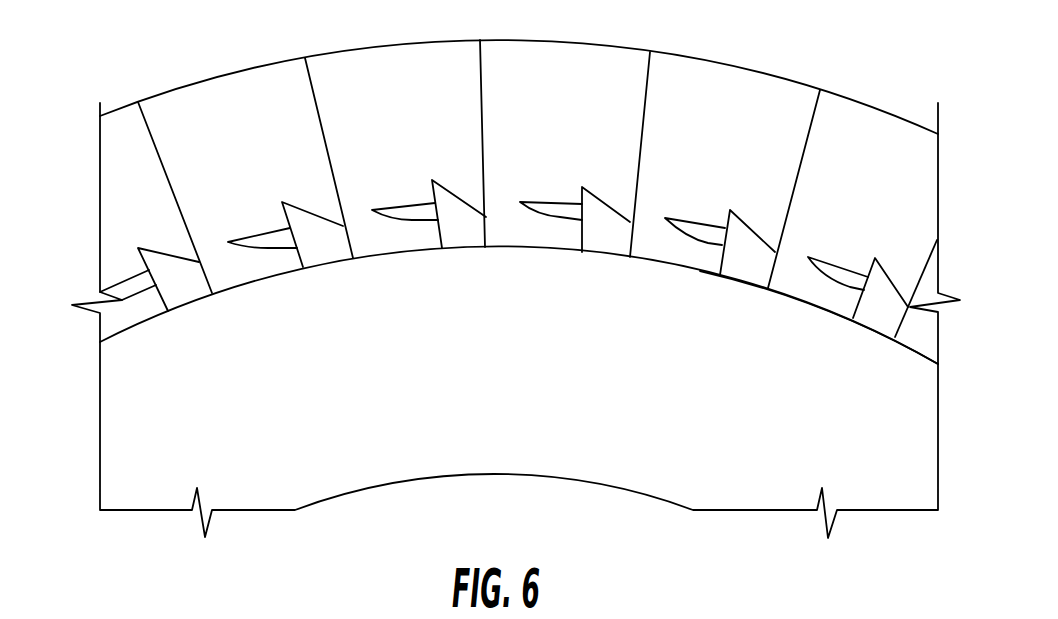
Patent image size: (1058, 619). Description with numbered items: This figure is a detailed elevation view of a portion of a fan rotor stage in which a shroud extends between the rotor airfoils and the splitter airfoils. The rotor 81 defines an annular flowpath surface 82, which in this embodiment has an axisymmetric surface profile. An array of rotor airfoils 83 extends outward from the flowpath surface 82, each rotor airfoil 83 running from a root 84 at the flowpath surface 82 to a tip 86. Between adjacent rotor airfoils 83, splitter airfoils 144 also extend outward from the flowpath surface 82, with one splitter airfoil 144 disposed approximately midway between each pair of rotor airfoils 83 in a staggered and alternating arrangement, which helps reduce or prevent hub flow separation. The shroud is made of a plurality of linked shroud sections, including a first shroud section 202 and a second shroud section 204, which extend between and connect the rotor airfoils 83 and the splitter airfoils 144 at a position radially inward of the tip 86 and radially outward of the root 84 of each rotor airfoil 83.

The rotor 81 is at (82, 462).
The flowpath surface 82 is at (245, 283).
The rotor airfoil 83 is at (223, 97).
The root 84 is at (813, 305).
The tip 86 is at (870, 107).
The splitter airfoil 144 is at (457, 230).
The first shroud section 202 is at (405, 205).
The second shroud section 204 is at (555, 205).